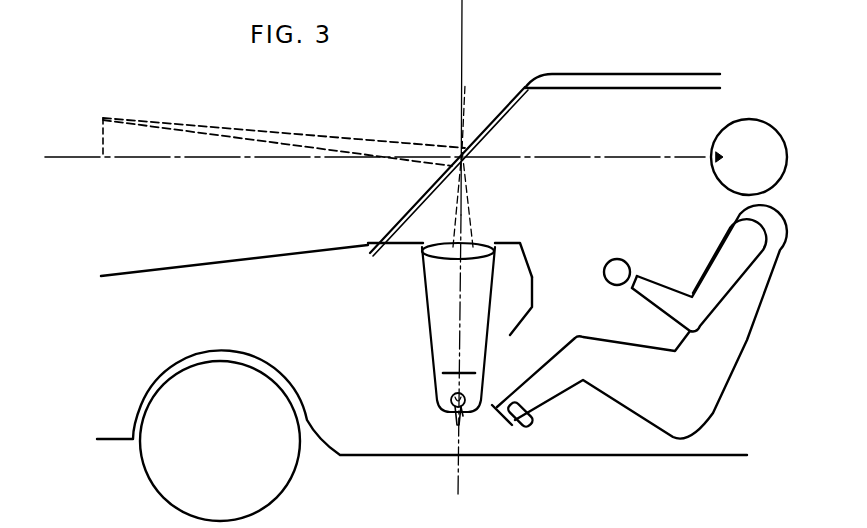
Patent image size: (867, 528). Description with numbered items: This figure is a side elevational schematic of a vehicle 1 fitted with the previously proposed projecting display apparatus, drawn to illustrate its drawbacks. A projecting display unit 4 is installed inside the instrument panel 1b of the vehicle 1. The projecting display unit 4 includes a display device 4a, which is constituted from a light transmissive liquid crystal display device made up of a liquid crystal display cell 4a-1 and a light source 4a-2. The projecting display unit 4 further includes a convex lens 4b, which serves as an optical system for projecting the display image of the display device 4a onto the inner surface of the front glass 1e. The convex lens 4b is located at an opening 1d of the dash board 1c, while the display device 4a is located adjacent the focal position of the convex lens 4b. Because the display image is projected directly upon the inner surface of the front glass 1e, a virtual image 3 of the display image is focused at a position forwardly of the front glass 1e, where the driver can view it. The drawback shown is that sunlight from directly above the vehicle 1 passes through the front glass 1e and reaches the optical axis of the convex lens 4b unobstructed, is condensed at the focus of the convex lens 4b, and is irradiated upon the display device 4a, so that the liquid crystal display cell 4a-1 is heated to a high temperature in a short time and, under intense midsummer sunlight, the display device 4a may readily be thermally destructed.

The vehicle 1 is at (617, 82).
The front glass 1e is at (510, 98).
The opening 1d is at (426, 244).
The dash board 1c is at (518, 242).
The instrument panel 1b is at (531, 265).
The virtual image 3 is at (104, 130).
The projecting display unit 4 is at (437, 302).
The display device 4a is at (445, 405).
The liquid crystal display (LCD) cell 4a-1 is at (448, 376).
The light source 4a-2 is at (463, 418).
The convex lens 4b is at (484, 247).